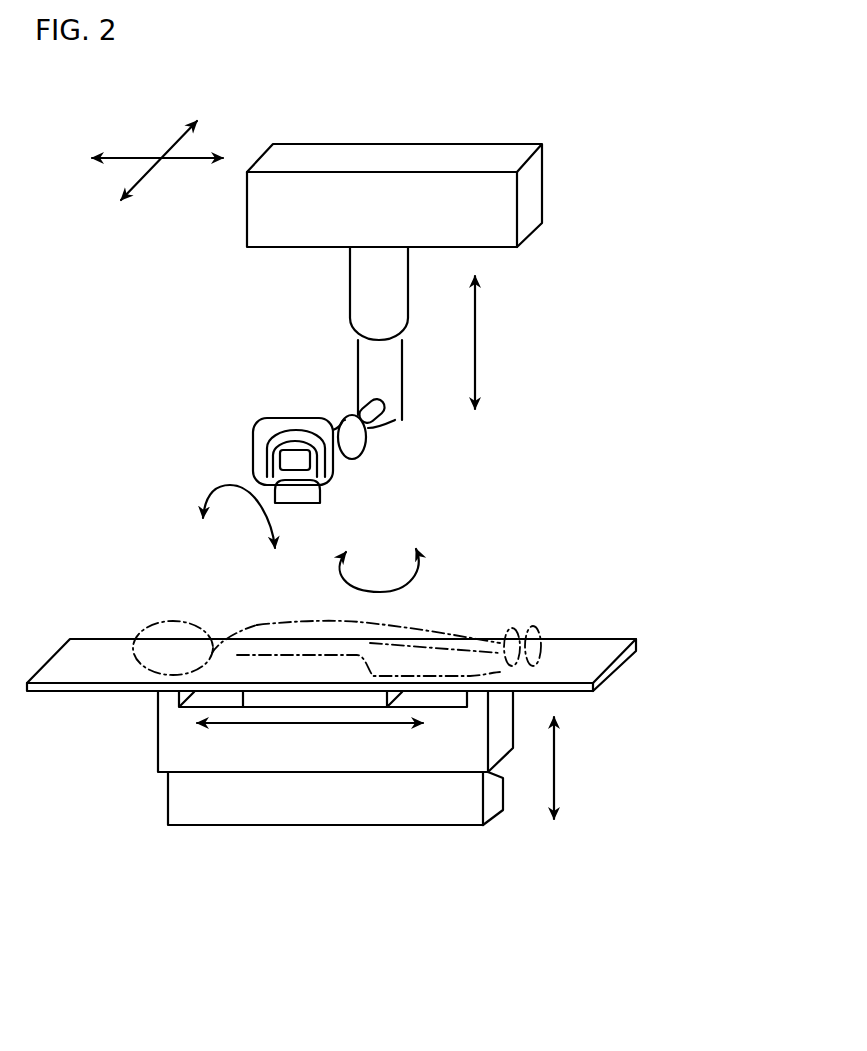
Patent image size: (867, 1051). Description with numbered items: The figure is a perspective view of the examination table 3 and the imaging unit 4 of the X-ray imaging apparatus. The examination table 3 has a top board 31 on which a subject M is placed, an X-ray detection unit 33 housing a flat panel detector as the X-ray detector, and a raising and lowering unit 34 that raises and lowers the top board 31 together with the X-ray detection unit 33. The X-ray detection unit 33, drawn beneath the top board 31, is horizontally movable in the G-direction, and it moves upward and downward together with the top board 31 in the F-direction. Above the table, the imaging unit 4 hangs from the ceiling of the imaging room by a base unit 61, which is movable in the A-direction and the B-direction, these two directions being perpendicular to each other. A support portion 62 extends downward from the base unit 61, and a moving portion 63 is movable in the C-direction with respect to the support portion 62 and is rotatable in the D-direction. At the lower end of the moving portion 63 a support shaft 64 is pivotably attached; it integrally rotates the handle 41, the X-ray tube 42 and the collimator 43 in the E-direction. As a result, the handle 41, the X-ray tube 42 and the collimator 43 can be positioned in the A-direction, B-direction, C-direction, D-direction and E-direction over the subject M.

The examination table 3 is at (626, 734).
The imaging unit 4 is at (262, 335).
The top board 31 is at (565, 645).
The X-ray detection unit 33 is at (315, 700).
The raising and lowering unit 34 is at (367, 753).
The handle 41 is at (253, 456).
The X-ray tube 42 is at (355, 440).
The collimator 43 is at (333, 498).
The base unit 61 is at (503, 215).
The support portion 62 is at (372, 285).
The moving portion 63 is at (370, 366).
The support shaft 64 is at (388, 416).
The subject M is at (250, 627).
The A-direction A is at (188, 160).
The B-direction B is at (178, 143).
The C-direction C is at (477, 341).
The D-direction D is at (422, 570).
The E-direction E is at (195, 489).
The F-direction F is at (556, 765).
The G-direction G is at (275, 725).